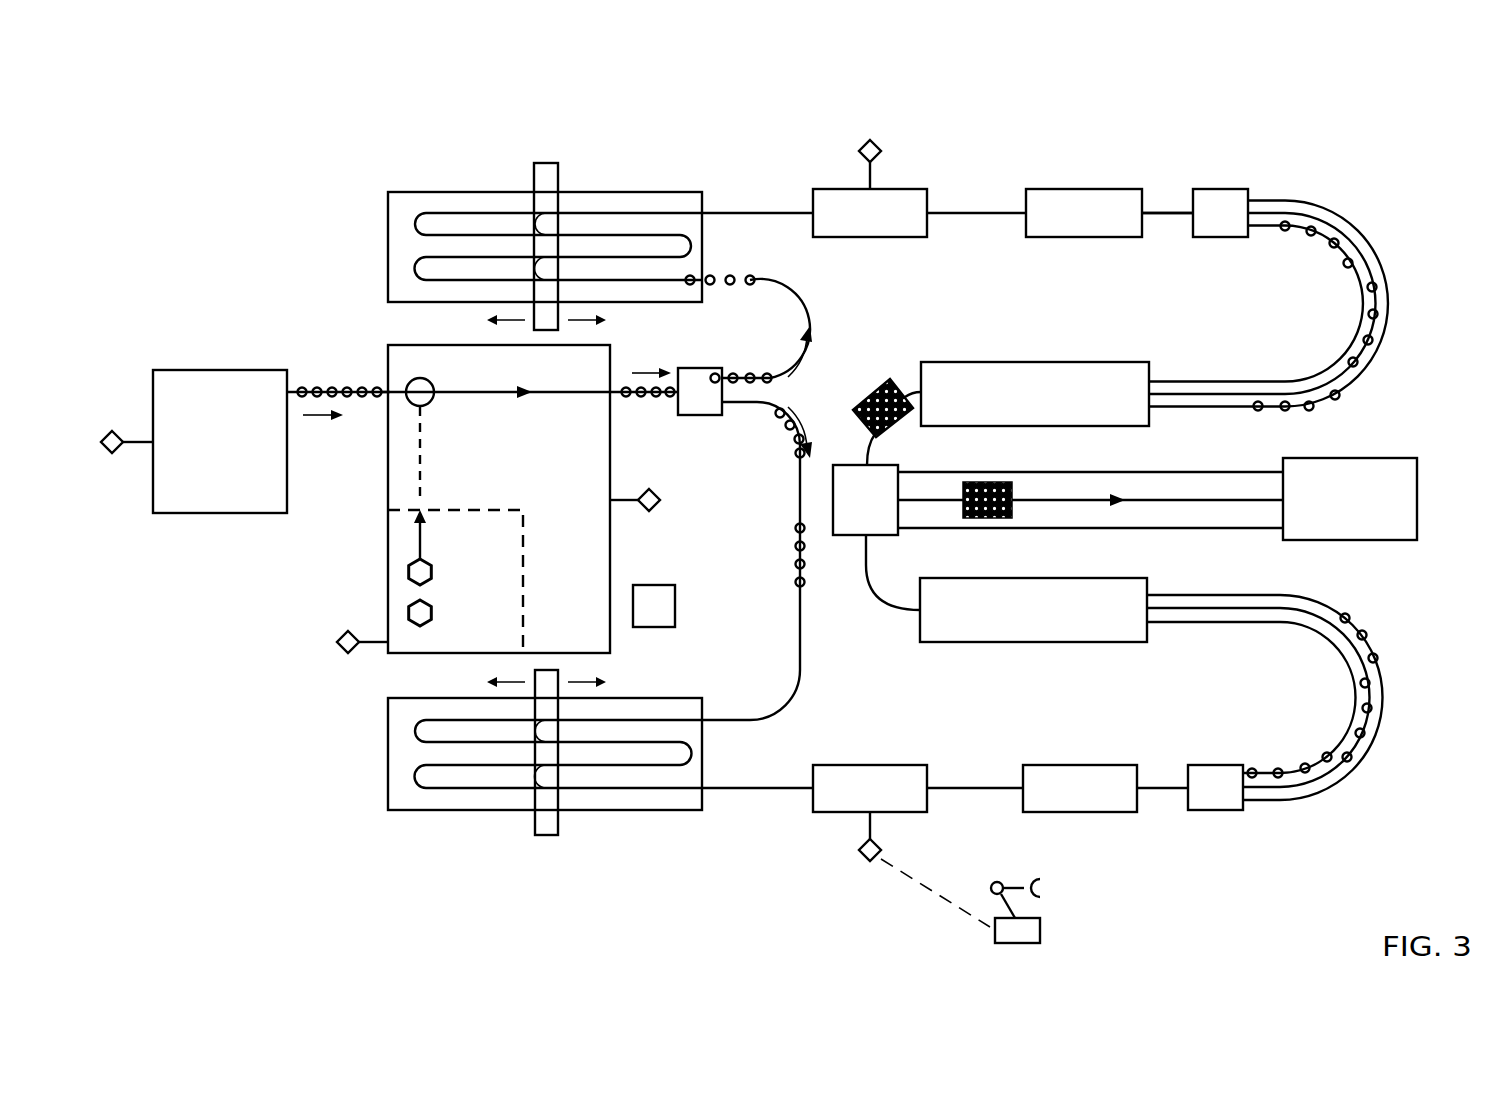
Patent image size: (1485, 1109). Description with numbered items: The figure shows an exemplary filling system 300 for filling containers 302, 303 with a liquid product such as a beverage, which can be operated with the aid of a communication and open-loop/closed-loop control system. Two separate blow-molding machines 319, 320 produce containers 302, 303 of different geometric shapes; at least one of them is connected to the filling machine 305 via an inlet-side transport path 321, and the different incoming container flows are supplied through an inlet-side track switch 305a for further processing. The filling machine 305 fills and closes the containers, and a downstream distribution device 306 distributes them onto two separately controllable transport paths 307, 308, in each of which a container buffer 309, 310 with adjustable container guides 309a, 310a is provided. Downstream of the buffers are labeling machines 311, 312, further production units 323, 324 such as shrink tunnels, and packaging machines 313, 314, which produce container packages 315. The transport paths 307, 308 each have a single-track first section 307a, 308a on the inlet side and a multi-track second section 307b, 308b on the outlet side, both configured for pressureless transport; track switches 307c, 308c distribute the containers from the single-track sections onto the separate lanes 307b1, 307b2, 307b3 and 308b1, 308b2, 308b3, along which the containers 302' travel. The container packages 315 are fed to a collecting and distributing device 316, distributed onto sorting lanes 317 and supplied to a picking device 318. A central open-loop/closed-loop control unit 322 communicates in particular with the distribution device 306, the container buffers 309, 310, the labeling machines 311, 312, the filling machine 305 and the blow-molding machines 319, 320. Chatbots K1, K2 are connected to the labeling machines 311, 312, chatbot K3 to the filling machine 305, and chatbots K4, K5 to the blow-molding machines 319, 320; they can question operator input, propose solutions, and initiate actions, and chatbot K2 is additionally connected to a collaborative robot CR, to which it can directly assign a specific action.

The filling system 300 is at (337, 827).
The container 302 is at (340, 378).
The processed sample containers 302' is at (757, 561).
The container 303 is at (433, 574).
The filling machine 305 is at (548, 573).
The track switch on the inlet side 305a is at (434, 404).
The distribution device 306 is at (682, 407).
The transport path 307 is at (753, 811).
The first section 307a is at (1163, 811).
The second section 307b is at (1304, 712).
The lane 307b1 is at (1352, 621).
The lane 307b2 is at (1310, 606).
The lane 307b3 is at (1273, 608).
The track switch 307c is at (1240, 803).
The transport path 308 is at (752, 192).
The first section 308a is at (1167, 193).
The second section 308b is at (1308, 290).
The lane 308b1 is at (1351, 215).
The lane 308b2 is at (1368, 262).
The lane 308b3 is at (1363, 305).
The track switch 308c is at (1245, 228).
The container buffer 309 is at (638, 811).
The adjustable container guide 309a is at (548, 836).
The container buffer 310 is at (637, 192).
The adjustable container guide 310a is at (547, 162).
The labeling machine 311 is at (850, 803).
The labeling machine 312 is at (850, 228).
The packaging machine 313 is at (1013, 625).
The packaging machine 314 is at (1015, 409).
The container package 315 is at (870, 381).
The collecting and distributing device 316 is at (846, 515).
The sorting lane 317 is at (1212, 500).
The picking device 318 is at (1330, 514).
The blow-molding machine 319 is at (200, 455).
The blow-molding machine 320 is at (465, 628).
The transport path on the inlet side 321 is at (374, 400).
The central open-loop/closed-loop control unit 322 is at (637, 620).
The production unit 323 is at (1060, 803).
The production unit 324 is at (1064, 228).
The chatbot K1 is at (870, 140).
The chatbot K2 is at (868, 862).
The chatbot K3 is at (649, 489).
The chatbot K4 is at (112, 431).
The chatbot K5 is at (348, 631).
The collaborative robot CR is at (1040, 930).